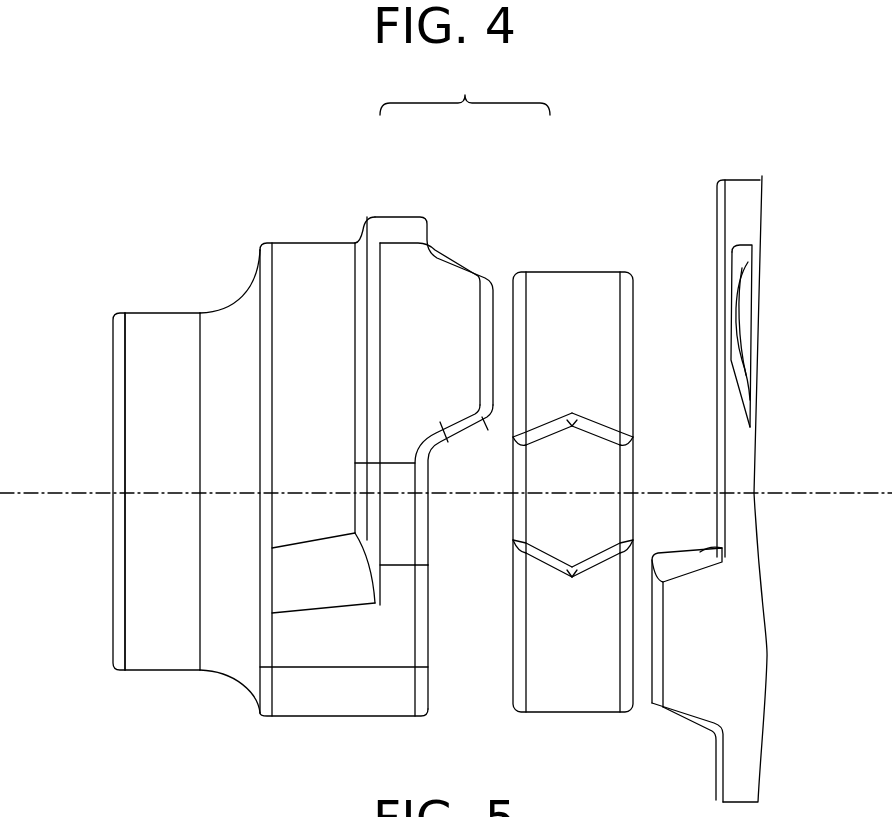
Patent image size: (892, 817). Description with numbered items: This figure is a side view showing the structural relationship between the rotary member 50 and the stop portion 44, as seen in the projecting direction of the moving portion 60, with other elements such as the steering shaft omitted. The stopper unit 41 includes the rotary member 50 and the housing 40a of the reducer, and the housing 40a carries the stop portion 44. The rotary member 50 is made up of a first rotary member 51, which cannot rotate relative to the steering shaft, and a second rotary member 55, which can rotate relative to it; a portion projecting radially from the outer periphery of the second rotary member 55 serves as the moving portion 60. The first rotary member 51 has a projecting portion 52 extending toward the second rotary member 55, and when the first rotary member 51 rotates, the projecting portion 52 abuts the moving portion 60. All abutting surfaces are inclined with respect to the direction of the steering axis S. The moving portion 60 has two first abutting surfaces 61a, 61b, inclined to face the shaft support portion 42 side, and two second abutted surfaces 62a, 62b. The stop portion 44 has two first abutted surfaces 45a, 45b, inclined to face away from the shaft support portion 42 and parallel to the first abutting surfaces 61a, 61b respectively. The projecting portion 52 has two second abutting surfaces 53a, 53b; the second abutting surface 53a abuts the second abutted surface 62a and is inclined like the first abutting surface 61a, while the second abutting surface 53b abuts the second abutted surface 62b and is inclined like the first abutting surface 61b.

The stopper unit 41 is at (210, 200).
The projecting portion 52 is at (465, 338).
The first rotary member 51 is at (333, 235).
The second abutting surface 53a is at (465, 430).
The second abutting surface 53b is at (478, 276).
The rotary member 50 is at (465, 86).
The second rotary member 55 is at (571, 272).
The moving portion 60 is at (585, 475).
The first abutting surface 61a is at (597, 568).
The first abutting surface 61b is at (600, 422).
The second abutted surface 62a is at (545, 427).
The second abutted surface 62b is at (545, 565).
The shaft support portion 42 is at (709, 454).
The housing 40a is at (740, 180).
The stop portion 44 is at (732, 661).
The first abutted surface 45a is at (688, 558).
The first abutted surface 45b is at (685, 720).
The steering axis S is at (58, 490).